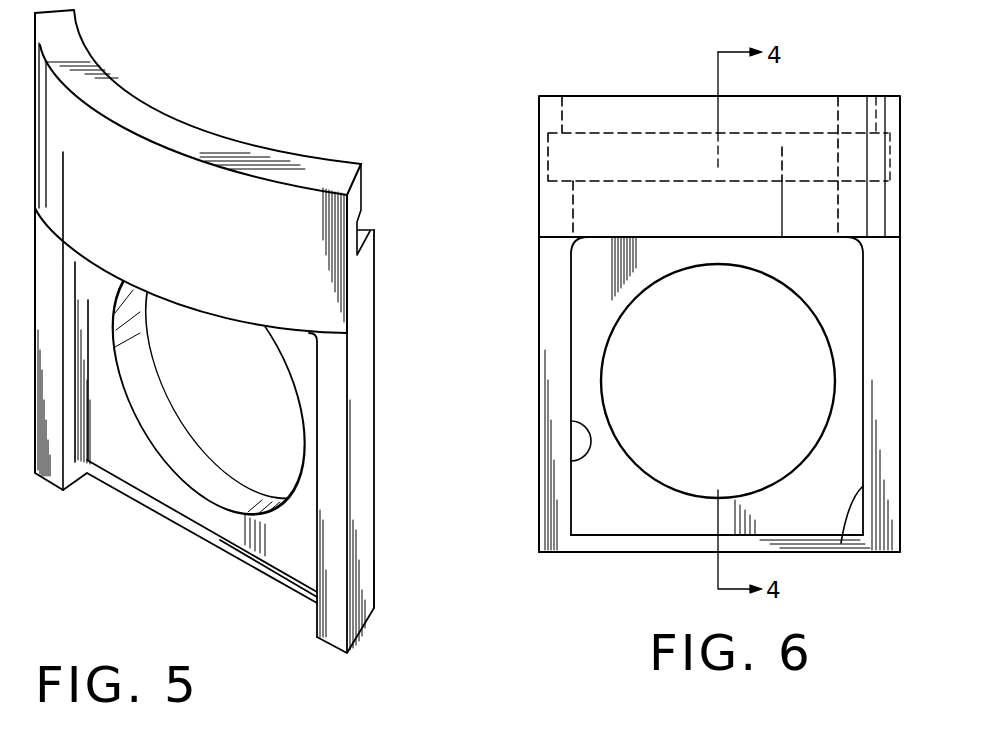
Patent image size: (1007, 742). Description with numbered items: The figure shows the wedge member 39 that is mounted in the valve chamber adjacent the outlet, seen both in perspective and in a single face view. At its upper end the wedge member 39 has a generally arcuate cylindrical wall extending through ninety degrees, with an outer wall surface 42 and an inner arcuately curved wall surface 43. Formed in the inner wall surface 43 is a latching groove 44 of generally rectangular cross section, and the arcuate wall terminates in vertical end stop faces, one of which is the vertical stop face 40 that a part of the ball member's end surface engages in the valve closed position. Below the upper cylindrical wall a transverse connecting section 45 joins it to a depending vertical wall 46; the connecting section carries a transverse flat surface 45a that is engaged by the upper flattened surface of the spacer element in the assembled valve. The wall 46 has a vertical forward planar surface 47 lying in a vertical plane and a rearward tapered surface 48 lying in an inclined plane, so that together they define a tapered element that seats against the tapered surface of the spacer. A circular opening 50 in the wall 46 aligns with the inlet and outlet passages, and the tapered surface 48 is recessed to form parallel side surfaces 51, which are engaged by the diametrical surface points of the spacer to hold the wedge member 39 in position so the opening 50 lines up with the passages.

In FIG. 5, the wedge member 39 is at (190, 497).
In FIG. 6, the wedge member 39 is at (538, 278).
In FIG. 5, the vertical stop face 40 is at (361, 348).
In FIG. 5, the outer wall surface 42 is at (153, 187).
In FIG. 5, the inner arcuately curved wall surface 43 is at (265, 147).
In FIG. 5, the latching groove 44 is at (360, 220).
In FIG. 6, the transverse connecting section 45 is at (650, 157).
In FIG. 5, the transverse flat surface 45a is at (283, 325).
In FIG. 6, the transverse flat surface 45a is at (805, 238).
In FIG. 6, the depending vertical wall 46 is at (640, 507).
In FIG. 5, the vertical forward planar surface 47 is at (375, 567).
In FIG. 5, the rearward tapered surface 48 is at (290, 550).
In FIG. 5, the circular opening 50 is at (133, 370).
In FIG. 6, the circular opening 50 is at (665, 279).
In FIG. 5, the parallel side surfaces 51 is at (78, 495).
In FIG. 6, the parallel side surfaces 51 is at (571, 460).